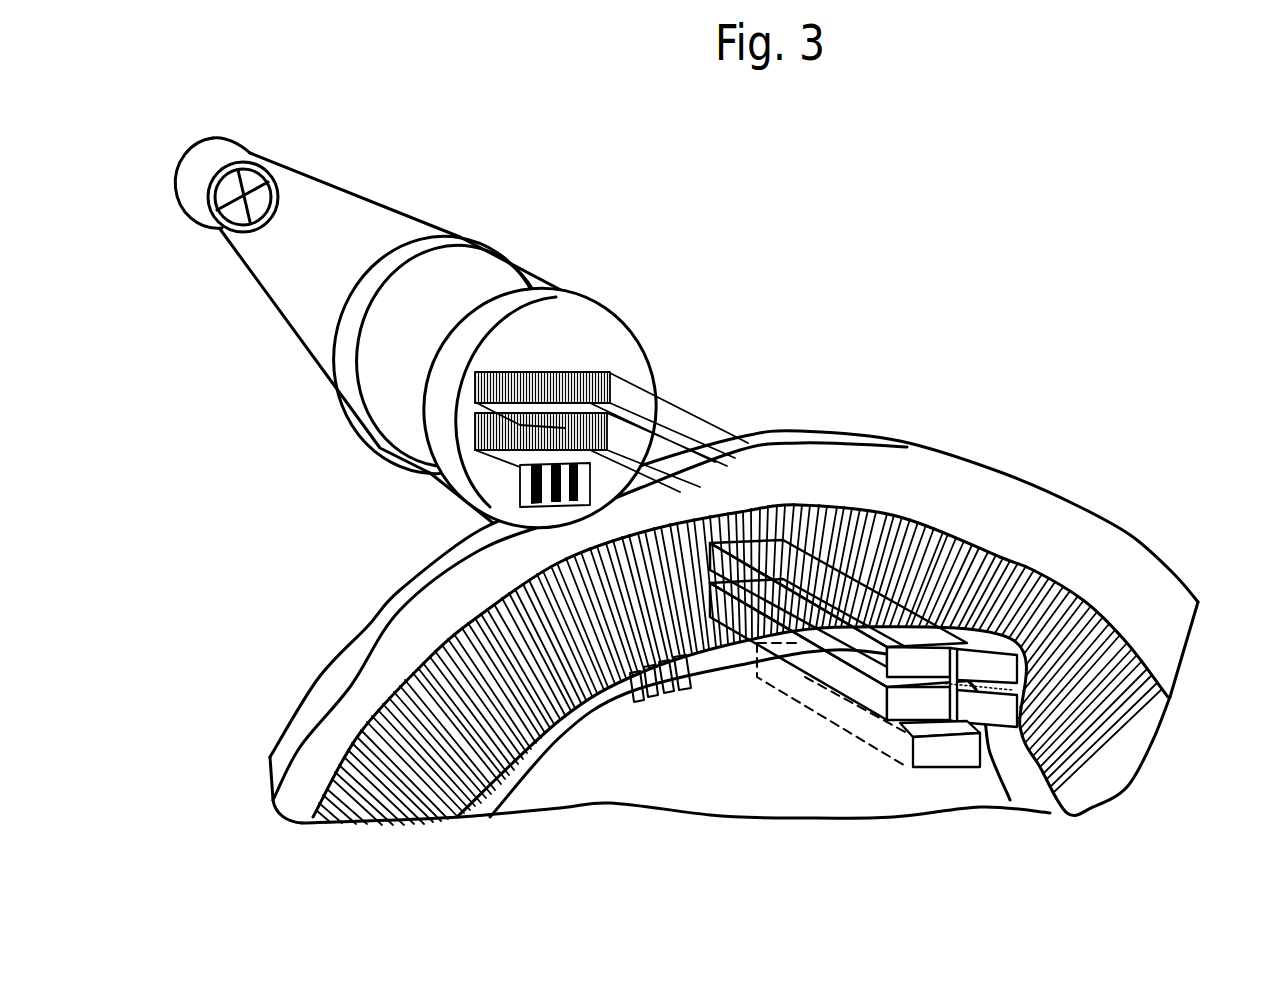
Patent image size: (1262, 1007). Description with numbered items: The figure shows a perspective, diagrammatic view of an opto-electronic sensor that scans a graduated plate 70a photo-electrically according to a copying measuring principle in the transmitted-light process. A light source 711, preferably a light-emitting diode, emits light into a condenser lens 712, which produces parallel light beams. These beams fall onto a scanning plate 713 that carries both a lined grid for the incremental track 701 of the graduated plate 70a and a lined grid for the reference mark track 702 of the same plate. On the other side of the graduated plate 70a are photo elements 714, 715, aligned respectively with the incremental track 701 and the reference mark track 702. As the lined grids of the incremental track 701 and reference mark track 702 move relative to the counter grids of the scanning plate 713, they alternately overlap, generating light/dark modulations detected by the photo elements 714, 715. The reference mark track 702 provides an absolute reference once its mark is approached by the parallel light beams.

The graduated plate 70a is at (1093, 543).
The incremental track 701 is at (880, 535).
The reference mark track 702 is at (653, 700).
The light source 711 is at (200, 160).
The condenser lens 712 is at (440, 290).
The scanning plate 713 is at (572, 335).
The photo element 714 is at (973, 650).
The photo element 715 is at (933, 753).